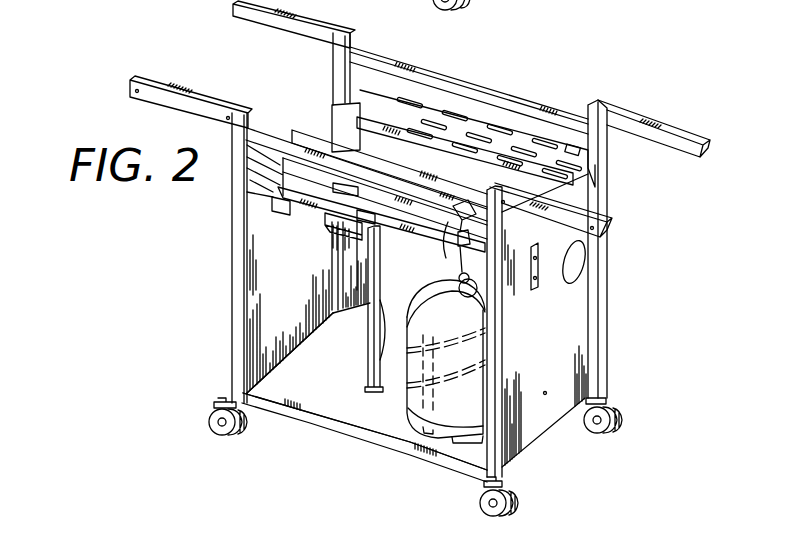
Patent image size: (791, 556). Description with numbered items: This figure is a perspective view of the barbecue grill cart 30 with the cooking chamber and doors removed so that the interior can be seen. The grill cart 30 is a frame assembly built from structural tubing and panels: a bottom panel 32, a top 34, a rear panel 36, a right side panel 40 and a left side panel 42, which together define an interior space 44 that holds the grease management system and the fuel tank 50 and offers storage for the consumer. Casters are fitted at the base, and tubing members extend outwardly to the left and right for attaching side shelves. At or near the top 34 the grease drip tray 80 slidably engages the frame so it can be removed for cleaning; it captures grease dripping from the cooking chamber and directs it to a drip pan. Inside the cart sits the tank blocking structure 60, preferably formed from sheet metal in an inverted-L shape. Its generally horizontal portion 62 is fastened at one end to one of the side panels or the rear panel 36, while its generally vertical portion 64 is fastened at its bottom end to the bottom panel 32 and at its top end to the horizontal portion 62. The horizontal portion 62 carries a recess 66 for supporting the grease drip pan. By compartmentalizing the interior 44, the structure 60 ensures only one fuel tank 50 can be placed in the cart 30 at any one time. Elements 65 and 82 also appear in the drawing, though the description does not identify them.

The grill cart 30 is at (611, 95).
The bottom panel 32 is at (313, 380).
The top 34 is at (478, 146).
The rear panel 36 is at (440, 260).
The right side panel 40 is at (563, 338).
The left side panel 42 is at (306, 282).
The interior space 44 is at (302, 298).
The fuel tank 50 is at (473, 377).
The tank blocking structure 60 is at (366, 328).
The generally horizontal portion 62 is at (276, 207).
The generally vertical portion 64 is at (384, 347).
The mounting bracket 65 is at (386, 212).
The recess 66 is at (333, 222).
The grease drip tray 80 is at (400, 164).
The bracket 82 is at (337, 186).